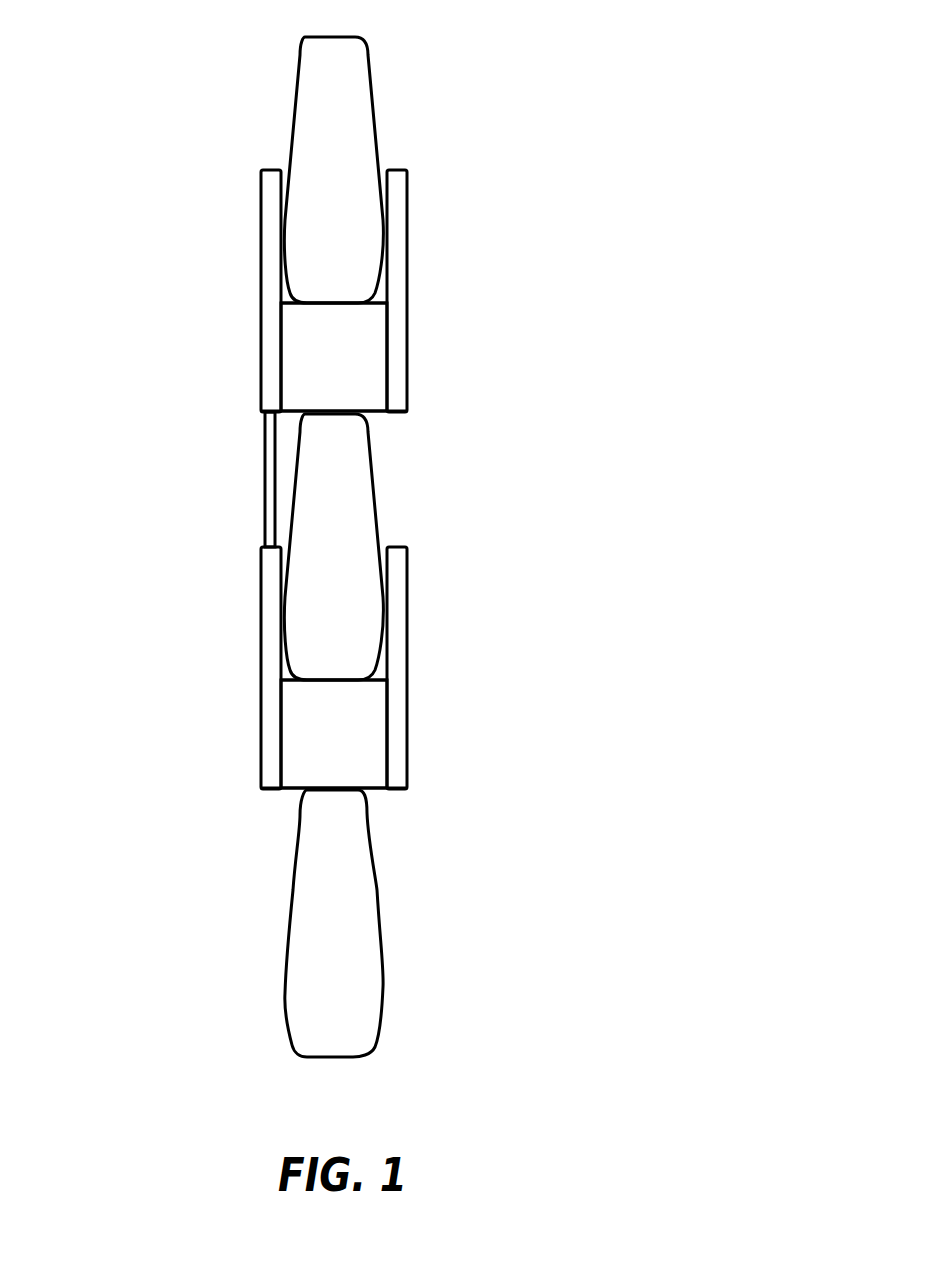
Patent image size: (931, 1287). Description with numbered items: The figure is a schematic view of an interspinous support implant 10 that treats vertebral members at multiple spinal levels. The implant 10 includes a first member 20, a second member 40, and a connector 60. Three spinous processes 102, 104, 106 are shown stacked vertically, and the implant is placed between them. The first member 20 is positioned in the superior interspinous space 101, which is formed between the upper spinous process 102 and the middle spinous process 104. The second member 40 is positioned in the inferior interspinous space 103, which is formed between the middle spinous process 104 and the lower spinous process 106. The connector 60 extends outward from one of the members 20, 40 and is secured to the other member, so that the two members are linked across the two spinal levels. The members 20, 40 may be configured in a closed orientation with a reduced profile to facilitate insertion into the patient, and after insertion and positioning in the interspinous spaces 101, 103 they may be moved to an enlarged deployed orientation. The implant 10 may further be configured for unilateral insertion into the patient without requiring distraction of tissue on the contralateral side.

The interspinous support implant 10 is at (127, 252).
The first member 20 is at (407, 278).
The second member 40 is at (407, 655).
The connector 60 is at (271, 471).
The superior interspinous space 101 is at (368, 413).
The spinous process 102 is at (343, 118).
The inferior interspinous space 103 is at (377, 793).
The spinous process 104 is at (347, 495).
The spinous process 106 is at (347, 868).